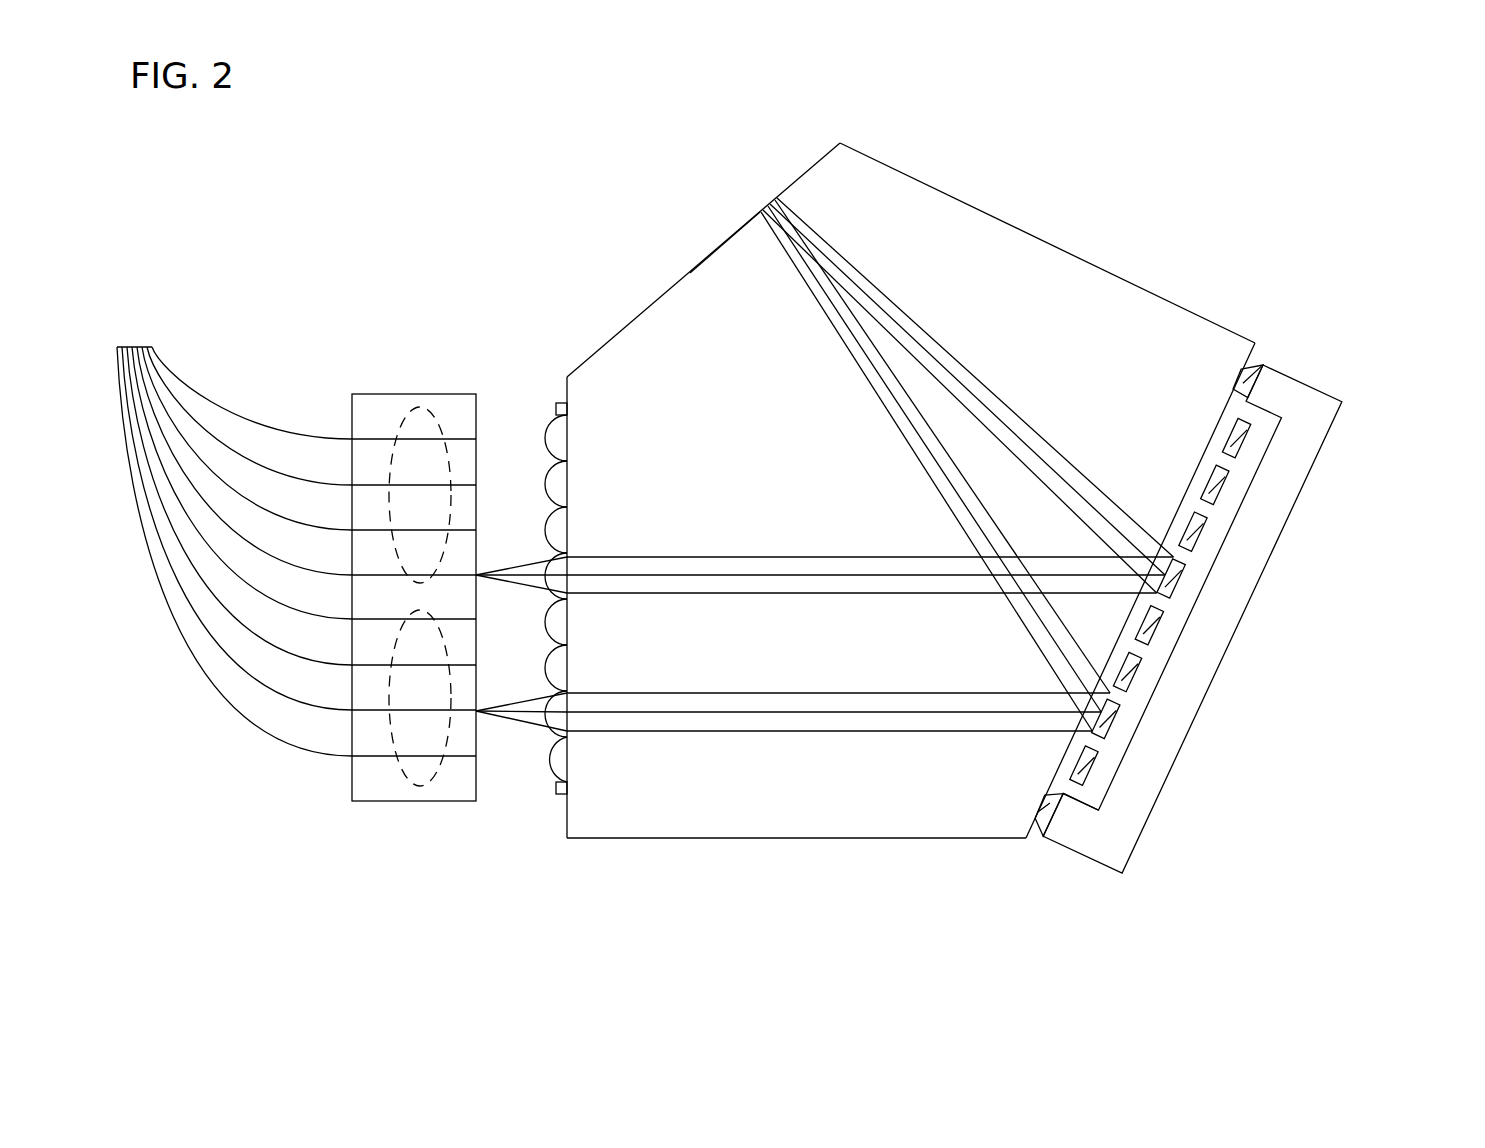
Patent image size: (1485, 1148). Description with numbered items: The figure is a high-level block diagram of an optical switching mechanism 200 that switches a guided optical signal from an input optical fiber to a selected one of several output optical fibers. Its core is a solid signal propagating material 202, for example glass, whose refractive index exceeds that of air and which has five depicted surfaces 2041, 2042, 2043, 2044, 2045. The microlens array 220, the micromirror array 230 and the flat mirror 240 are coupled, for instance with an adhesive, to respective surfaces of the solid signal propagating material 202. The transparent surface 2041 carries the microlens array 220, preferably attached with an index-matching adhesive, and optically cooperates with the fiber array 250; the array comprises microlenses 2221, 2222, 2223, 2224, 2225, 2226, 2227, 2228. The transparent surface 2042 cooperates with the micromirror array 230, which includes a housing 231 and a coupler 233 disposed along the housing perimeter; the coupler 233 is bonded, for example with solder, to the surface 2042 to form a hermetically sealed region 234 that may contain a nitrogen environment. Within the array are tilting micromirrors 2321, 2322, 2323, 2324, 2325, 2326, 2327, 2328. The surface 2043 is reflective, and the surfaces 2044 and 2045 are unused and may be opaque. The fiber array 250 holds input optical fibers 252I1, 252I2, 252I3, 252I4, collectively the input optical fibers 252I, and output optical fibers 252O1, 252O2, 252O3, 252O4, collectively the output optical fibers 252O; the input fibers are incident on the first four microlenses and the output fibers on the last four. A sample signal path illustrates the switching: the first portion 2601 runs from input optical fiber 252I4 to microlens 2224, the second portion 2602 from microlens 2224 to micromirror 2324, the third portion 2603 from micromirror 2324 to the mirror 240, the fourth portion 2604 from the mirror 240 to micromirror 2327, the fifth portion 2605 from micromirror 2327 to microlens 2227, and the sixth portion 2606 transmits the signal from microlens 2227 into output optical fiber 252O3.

The optical switching mechanism 200 is at (203, 138).
The solid signal propagating material 202 is at (953, 495).
The surface 2041 is at (565, 828).
The surface 2042 is at (1258, 360).
The surface 2043 is at (840, 144).
The surface 2044 is at (717, 839).
The surface 2045 is at (1005, 223).
The microlens array 220 is at (558, 403).
The microlens 2221 is at (548, 440).
The microlens 2222 is at (548, 485).
The microlens 2223 is at (548, 530).
The microlens 2224 is at (550, 572).
The microlens 2225 is at (548, 622).
The microlens 2226 is at (548, 668).
The microlens 2227 is at (550, 708).
The microlens 2228 is at (548, 759).
The micromirror array 230 is at (1224, 651).
The housing 231 is at (1192, 619).
The micromirror 2321 is at (1236, 437).
The micromirror 2322 is at (1215, 484).
The micromirror 2323 is at (1193, 531).
The micromirror 2324 is at (1171, 578).
The micromirror 2325 is at (1149, 625).
The micromirror 2326 is at (1127, 671).
The micromirror 2327 is at (1106, 718).
The micromirror 2328 is at (1084, 765).
The coupler 233 is at (1145, 596).
The hermetically sealed region 234 is at (1092, 792).
The flat mirror 240 is at (702, 262).
The fiber array 250 is at (352, 790).
The input optical fibers 252I is at (420, 406).
The output optical fibers 252O is at (420, 786).
The input optical fiber 252I1 is at (314, 393).
The input optical fiber 252I2 is at (311, 416).
The input optical fiber 252I3 is at (309, 438).
The input optical fiber 252I4 is at (306, 461).
The output optical fiber 252O1 is at (304, 483).
The output optical fiber 252O2 is at (301, 506).
The output optical fiber 252O3 is at (299, 528).
The output optical fiber 252O4 is at (296, 551).
The first portion 2601 is at (516, 580).
The second portion 2602 is at (805, 596).
The third portion 2603 is at (968, 385).
The fourth portion 2604 is at (905, 432).
The fifth portion 2605 is at (690, 728).
The sixth portion 2606 is at (515, 714).